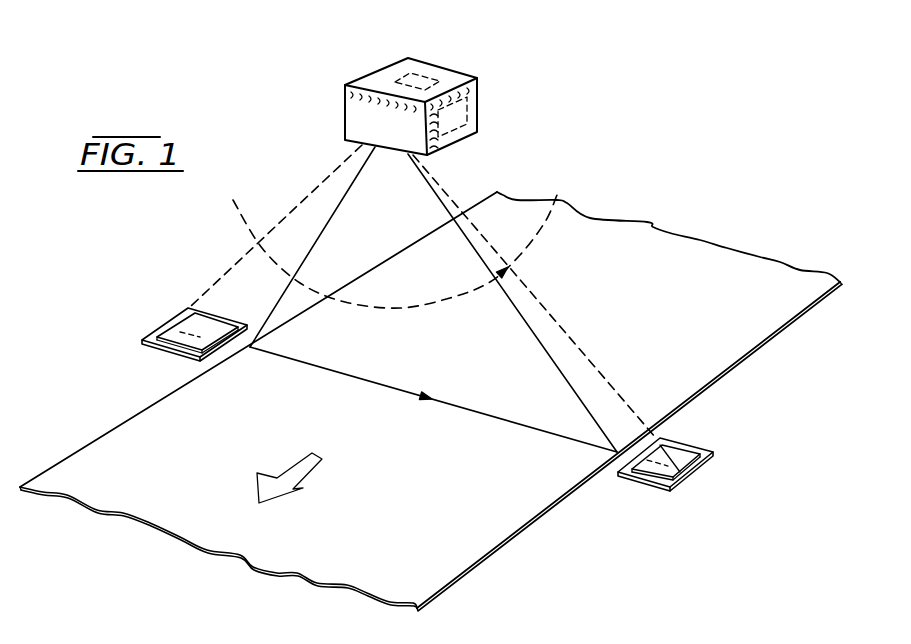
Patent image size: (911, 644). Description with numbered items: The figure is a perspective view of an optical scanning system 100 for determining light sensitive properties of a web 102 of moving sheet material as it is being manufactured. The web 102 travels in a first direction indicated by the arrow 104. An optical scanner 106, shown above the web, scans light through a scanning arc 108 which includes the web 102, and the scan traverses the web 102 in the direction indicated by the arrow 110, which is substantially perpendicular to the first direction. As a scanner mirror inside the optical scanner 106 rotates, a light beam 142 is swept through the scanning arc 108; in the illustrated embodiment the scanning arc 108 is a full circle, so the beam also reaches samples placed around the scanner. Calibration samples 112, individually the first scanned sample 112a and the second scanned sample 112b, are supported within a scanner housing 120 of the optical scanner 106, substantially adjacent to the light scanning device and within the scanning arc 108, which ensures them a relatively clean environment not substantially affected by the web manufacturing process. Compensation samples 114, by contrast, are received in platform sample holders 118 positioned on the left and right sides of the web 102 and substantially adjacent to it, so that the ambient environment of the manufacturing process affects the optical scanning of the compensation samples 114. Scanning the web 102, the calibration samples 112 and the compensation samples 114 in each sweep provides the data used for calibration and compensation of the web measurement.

The optical scanning system 100 is at (520, 142).
The web 102 is at (760, 333).
The arrow 104 is at (310, 470).
The optical scanner 106 is at (391, 84).
The scanning arc 108 is at (430, 303).
The arrow 110 is at (428, 408).
The calibration samples 112 is at (464, 75).
The first scanned sample 112a is at (477, 113).
The second scanned sample 112b is at (398, 69).
The compensation samples 114 is at (147, 347).
The platform sample holders 118 is at (173, 357).
The scanner housing 120 is at (347, 110).
The light beam 142 is at (277, 299).